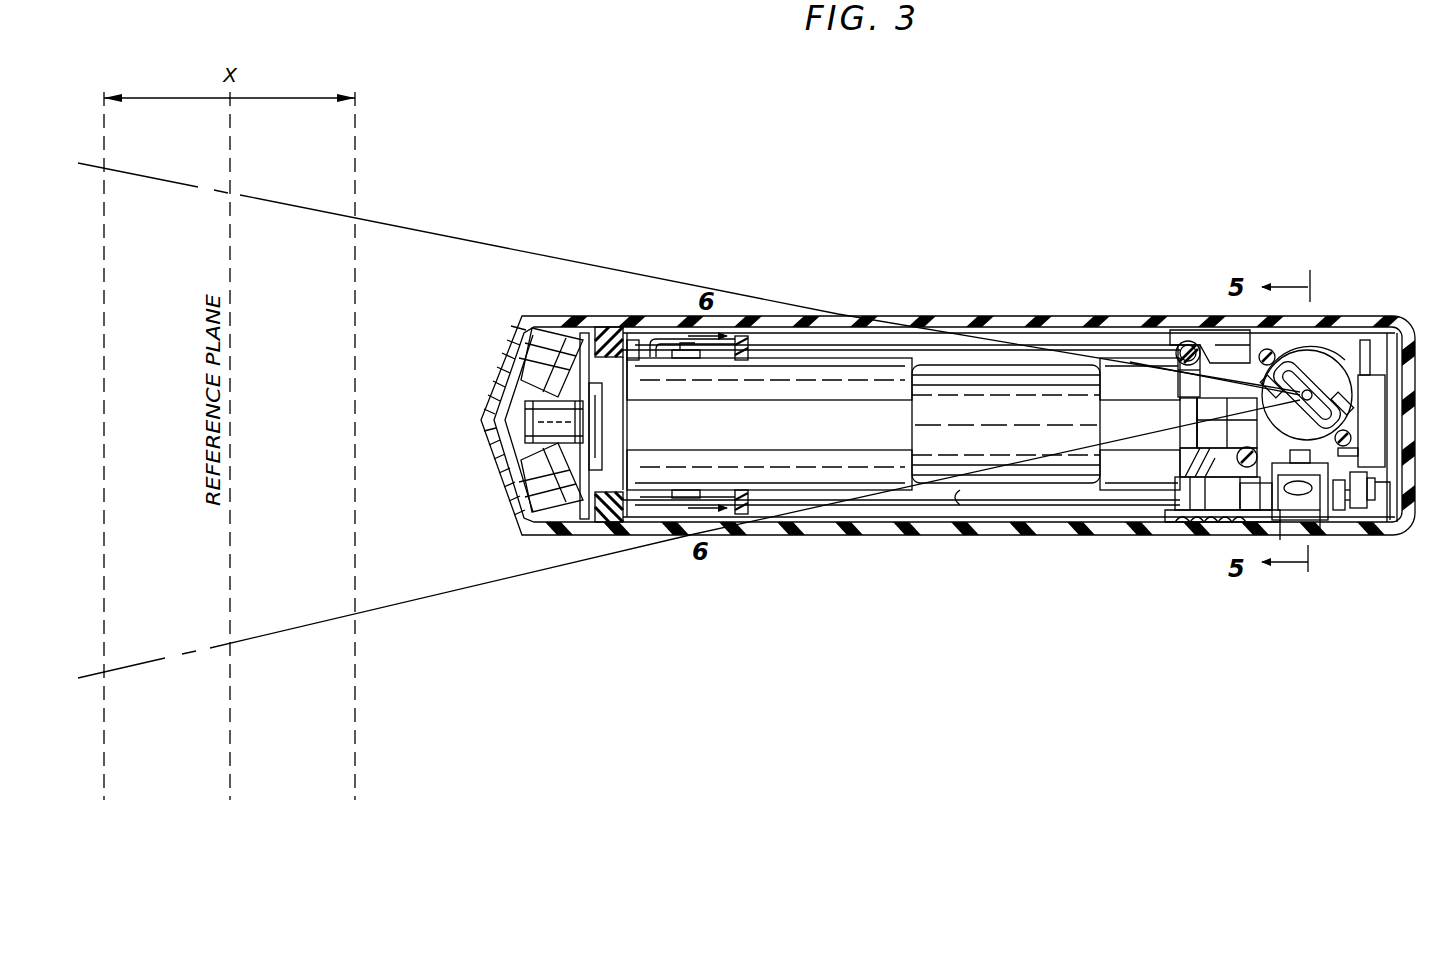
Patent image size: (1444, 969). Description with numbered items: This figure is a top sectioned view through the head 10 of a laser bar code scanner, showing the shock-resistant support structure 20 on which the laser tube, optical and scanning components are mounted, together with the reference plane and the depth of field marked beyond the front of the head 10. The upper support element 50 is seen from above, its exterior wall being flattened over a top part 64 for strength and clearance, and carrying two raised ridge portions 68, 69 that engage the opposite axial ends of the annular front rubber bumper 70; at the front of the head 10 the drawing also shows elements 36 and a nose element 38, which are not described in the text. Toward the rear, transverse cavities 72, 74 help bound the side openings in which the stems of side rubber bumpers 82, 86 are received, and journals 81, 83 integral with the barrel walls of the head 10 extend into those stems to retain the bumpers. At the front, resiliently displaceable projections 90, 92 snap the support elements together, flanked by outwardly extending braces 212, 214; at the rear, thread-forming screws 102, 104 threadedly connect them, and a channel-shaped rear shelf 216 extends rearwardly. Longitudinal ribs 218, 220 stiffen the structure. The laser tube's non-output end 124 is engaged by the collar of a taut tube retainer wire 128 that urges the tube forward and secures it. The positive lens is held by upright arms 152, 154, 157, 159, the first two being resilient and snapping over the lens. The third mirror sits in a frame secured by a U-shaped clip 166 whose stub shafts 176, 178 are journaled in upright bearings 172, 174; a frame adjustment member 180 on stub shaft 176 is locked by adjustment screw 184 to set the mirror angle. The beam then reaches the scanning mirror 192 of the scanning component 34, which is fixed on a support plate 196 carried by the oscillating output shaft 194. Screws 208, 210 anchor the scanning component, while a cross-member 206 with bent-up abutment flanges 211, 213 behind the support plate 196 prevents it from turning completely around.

The head 10 is at (1406, 270).
The support structure 20 is at (1063, 345).
The scanning component 34 is at (1371, 421).
The rollers 36 is at (558, 335).
The nose ring 38 is at (487, 437).
The upper support element 50 is at (852, 385).
The top part 64 is at (878, 436).
The raised ridge portion 68 is at (633, 345).
The raised ridge portion 69 is at (583, 333).
The front rubber bumper 70 is at (606, 327).
The transverse cavity 72 is at (1178, 497).
The transverse cavity 74 is at (1176, 345).
The journal 81 is at (1190, 520).
The side rubber bumper 82 is at (1206, 522).
The journal 83 is at (1190, 340).
The side rubber bumper 86 is at (1205, 330).
The resiliently displaceable projection 90 is at (688, 487).
The resiliently displaceable projection 92 is at (692, 360).
The thread-forming screw 102 is at (1180, 350).
The thread-forming screw 104 is at (1220, 448).
The non-output end 124 is at (530, 438).
The tube retainer wire 128 is at (668, 335).
The upright arm 152 is at (1312, 530).
The upright arm 154 is at (1315, 457).
The upright arm 157 is at (1300, 405).
The upright arm 159 is at (1262, 459).
The U-shaped clip 166 is at (1316, 535).
The upright bearing 172 is at (1321, 530).
The upright bearing 174 is at (1248, 520).
The stub shaft 176 is at (1337, 520).
The stub shaft 178 is at (1300, 520).
The frame adjustment member 180 is at (1348, 525).
The adjustment screw 184 is at (1362, 520).
The scanning mirror 192 is at (1292, 350).
The output shaft 194 is at (1342, 378).
The support plate 196 is at (1295, 388).
The cross-member 206 is at (1361, 434).
The screw 208 is at (1363, 450).
The screw 210 is at (1260, 350).
The abutment flange 211 is at (1322, 345).
The brace 212 is at (748, 516).
The abutment flange 213 is at (1365, 360).
The brace 214 is at (755, 362).
The rear shelf 216 is at (1386, 520).
The longitudinal rib 218 is at (980, 503).
The longitudinal rib 220 is at (895, 355).